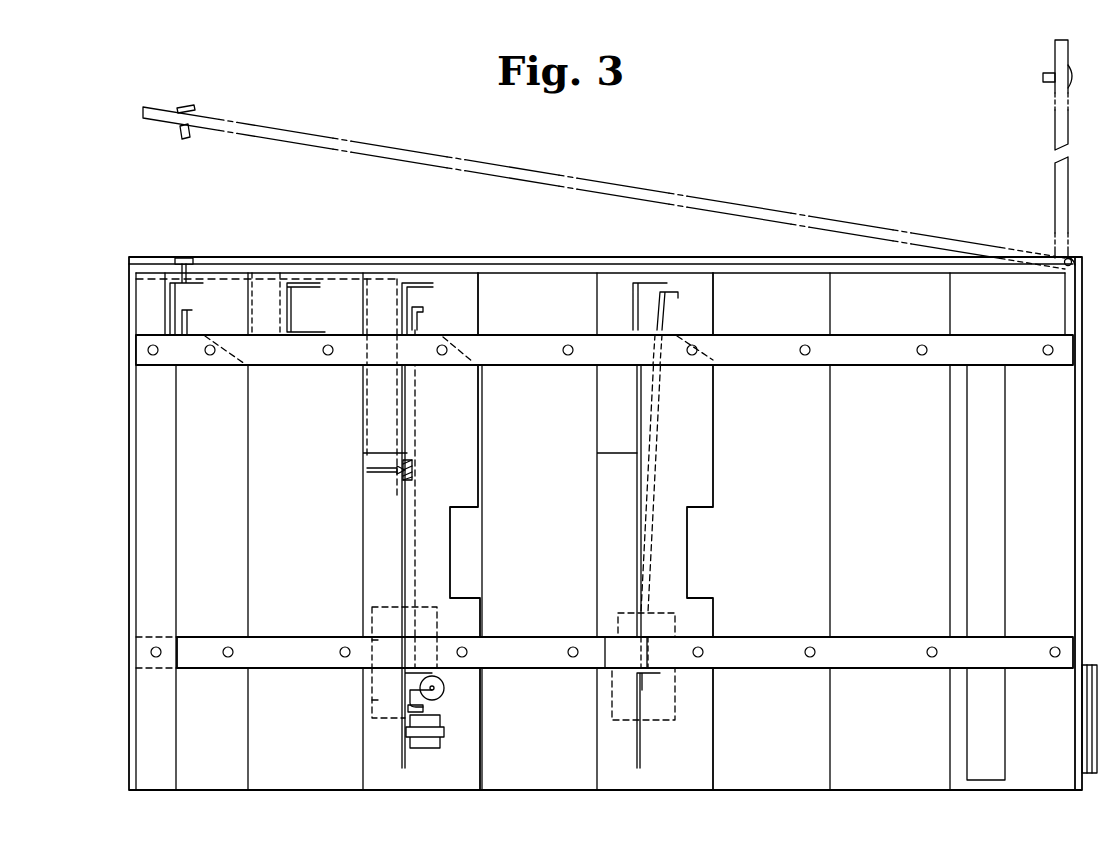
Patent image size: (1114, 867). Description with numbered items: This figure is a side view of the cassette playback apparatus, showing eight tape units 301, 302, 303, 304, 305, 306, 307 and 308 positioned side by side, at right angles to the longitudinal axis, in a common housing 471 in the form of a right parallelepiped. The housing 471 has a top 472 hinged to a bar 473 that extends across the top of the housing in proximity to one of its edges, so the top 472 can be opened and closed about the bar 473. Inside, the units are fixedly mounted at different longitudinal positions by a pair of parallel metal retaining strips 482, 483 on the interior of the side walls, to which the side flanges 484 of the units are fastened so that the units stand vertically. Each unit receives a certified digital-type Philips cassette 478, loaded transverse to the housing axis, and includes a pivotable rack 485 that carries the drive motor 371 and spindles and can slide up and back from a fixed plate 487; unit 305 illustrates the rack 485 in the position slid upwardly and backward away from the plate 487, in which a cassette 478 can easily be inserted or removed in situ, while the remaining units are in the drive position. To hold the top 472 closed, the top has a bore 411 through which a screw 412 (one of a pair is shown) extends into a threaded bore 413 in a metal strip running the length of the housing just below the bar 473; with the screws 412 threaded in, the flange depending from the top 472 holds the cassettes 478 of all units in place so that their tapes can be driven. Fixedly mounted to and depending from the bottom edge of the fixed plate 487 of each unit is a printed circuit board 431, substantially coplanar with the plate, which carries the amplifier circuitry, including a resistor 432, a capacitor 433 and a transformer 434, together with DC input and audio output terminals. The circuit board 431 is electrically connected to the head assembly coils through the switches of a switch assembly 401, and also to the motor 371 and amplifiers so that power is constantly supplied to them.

The unit 301 is at (186, 778).
The unit 302 is at (295, 782).
The unit 303 is at (406, 780).
The unit 304 is at (532, 780).
The unit 305 is at (641, 782).
The unit 306 is at (767, 780).
The unit 307 is at (883, 778).
The unit 308 is at (1017, 781).
The drive motor 371 is at (372, 615).
The switch assembly 401 is at (372, 672).
The bore 411 is at (217, 131).
The screw 412 is at (197, 108).
The threaded bore 413 is at (185, 140).
The printed circuit board 431 is at (402, 720).
The resistor 432 is at (448, 688).
The capacitor 433 is at (422, 710).
The transformer 434 is at (444, 732).
The housing 471 is at (100, 266).
The top 472 is at (318, 262).
The bar 473 is at (1070, 258).
The cassette 478 is at (383, 293).
The upper cross bar 482 is at (136, 358).
The lower cross bar 483 is at (193, 652).
The stepped panel member 484 is at (470, 438).
The bracket 485 is at (418, 318).
The bracket 487 is at (412, 291).